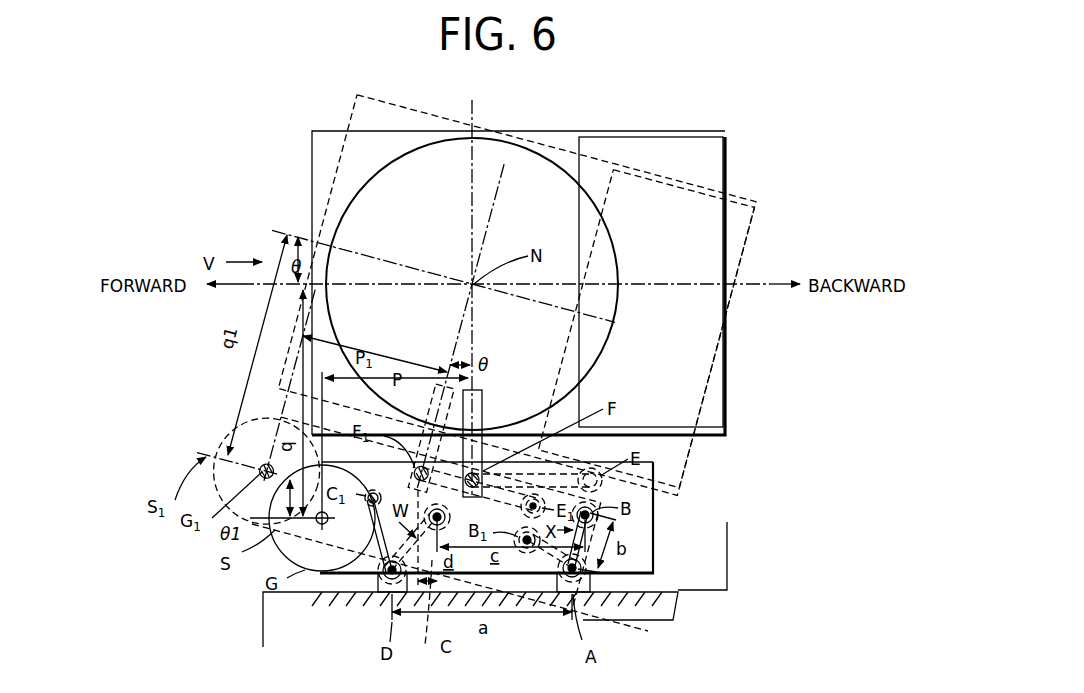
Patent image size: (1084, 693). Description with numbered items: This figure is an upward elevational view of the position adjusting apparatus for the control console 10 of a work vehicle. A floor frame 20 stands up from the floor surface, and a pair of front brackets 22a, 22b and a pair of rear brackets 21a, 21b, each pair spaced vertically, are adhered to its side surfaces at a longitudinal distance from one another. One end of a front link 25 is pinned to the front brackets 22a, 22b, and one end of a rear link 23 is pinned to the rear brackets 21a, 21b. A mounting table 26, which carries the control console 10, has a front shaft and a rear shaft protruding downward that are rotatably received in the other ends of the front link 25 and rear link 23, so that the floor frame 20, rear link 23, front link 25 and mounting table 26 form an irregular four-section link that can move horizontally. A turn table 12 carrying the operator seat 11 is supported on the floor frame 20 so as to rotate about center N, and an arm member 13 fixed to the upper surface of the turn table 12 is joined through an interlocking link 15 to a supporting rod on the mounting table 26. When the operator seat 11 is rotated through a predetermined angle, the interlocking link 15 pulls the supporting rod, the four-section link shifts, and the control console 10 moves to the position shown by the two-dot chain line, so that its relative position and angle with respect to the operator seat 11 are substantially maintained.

The control console 10 is at (226, 432).
The operator seat 11 is at (358, 112).
The turn table 12 is at (520, 142).
The arm member 13 is at (483, 398).
The interlocking link 15 is at (712, 413).
The floor frame 20 is at (263, 627).
The rear bracket 21a is at (642, 620).
The rear bracket 21b is at (600, 582).
The front bracket 22a is at (338, 623).
The front bracket 22b is at (380, 580).
The rear link 23 is at (560, 556).
The front link 25 is at (440, 530).
The mounting table 26 is at (653, 522).